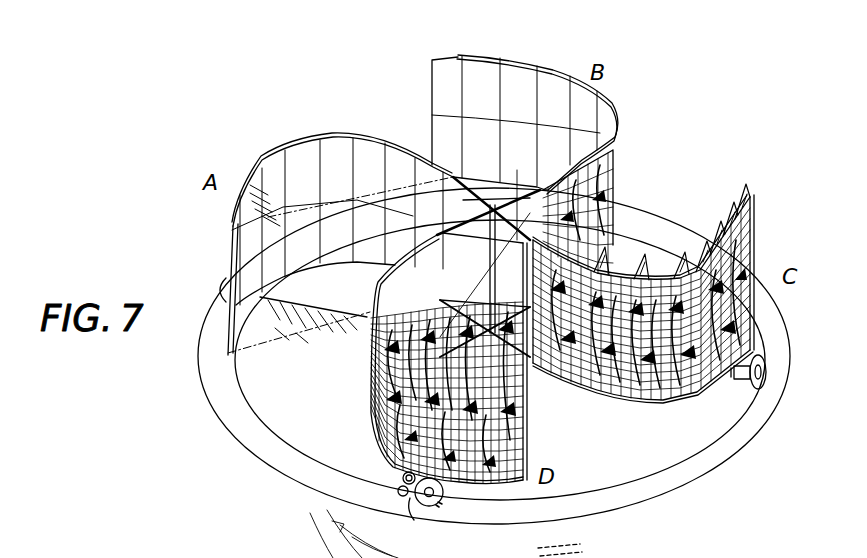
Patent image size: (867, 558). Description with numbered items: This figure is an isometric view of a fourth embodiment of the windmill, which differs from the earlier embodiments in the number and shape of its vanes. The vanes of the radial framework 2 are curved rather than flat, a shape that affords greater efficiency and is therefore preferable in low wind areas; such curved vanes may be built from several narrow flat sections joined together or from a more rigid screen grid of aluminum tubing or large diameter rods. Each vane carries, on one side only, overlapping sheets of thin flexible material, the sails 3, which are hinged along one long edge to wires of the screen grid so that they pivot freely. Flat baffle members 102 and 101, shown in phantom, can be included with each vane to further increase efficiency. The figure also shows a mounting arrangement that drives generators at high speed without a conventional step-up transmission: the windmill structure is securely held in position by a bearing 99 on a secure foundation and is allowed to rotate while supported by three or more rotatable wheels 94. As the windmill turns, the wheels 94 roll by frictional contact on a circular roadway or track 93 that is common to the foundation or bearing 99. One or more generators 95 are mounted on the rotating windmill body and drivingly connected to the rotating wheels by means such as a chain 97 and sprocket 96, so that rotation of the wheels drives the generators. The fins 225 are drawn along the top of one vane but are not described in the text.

The radial framework 2 is at (612, 106).
The sails 3 is at (738, 198).
The track 93 is at (273, 467).
The rotatable wheels 94 is at (445, 492).
The generators 95 is at (403, 475).
The sprocket 96 is at (399, 492).
The chain 97 is at (408, 500).
The bearing 99 is at (527, 392).
The flat baffle member 101 is at (293, 336).
The flat baffle member 102 is at (268, 193).
The fins 225 is at (727, 202).